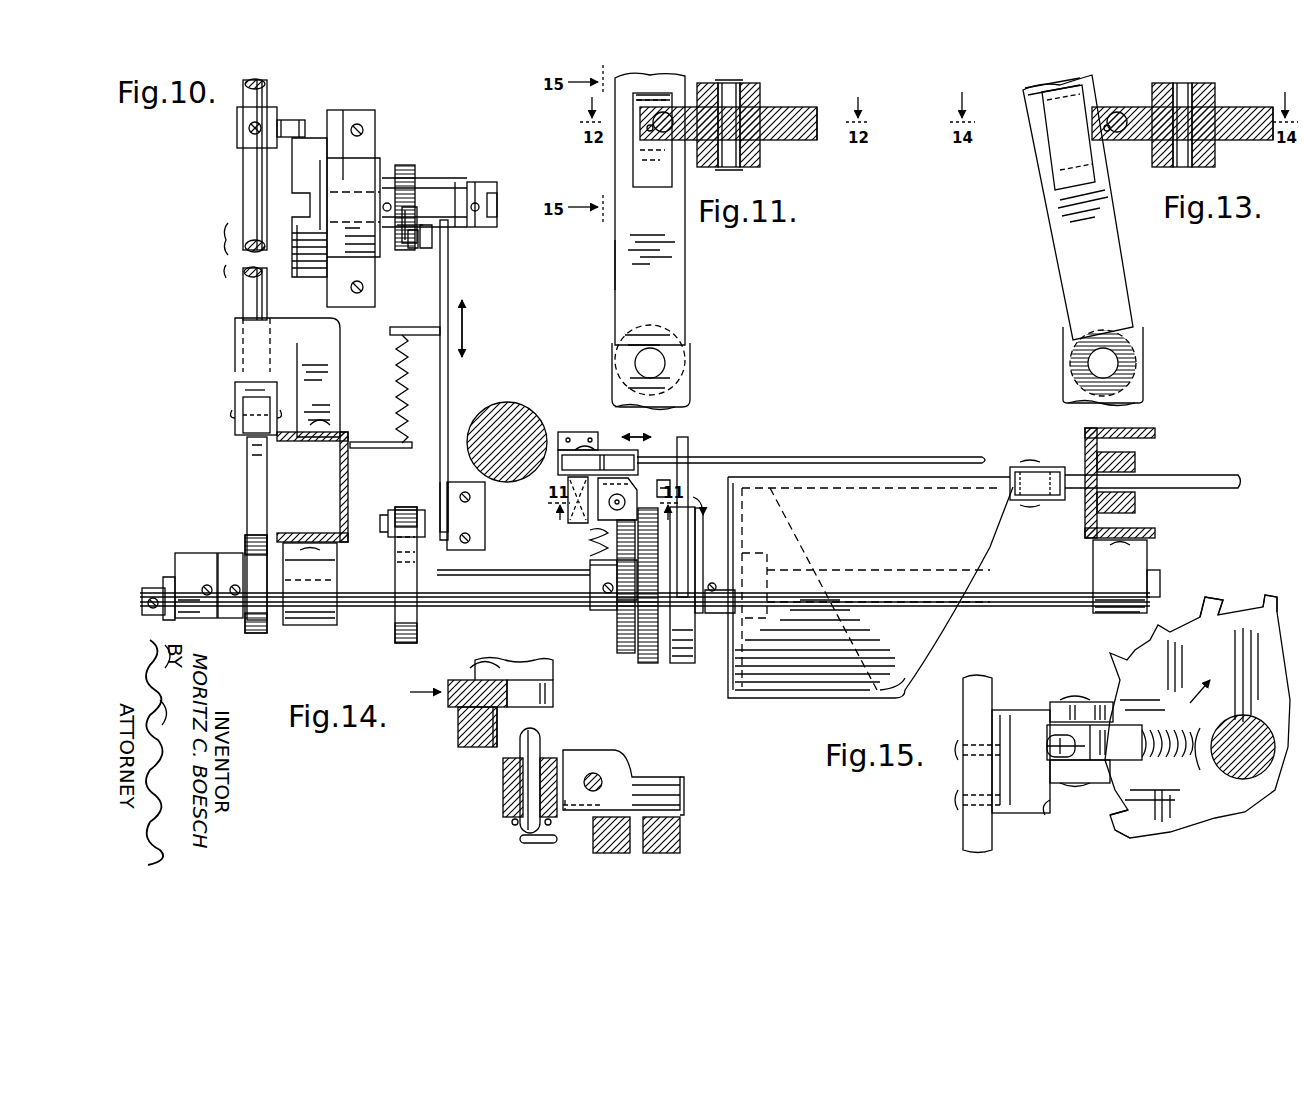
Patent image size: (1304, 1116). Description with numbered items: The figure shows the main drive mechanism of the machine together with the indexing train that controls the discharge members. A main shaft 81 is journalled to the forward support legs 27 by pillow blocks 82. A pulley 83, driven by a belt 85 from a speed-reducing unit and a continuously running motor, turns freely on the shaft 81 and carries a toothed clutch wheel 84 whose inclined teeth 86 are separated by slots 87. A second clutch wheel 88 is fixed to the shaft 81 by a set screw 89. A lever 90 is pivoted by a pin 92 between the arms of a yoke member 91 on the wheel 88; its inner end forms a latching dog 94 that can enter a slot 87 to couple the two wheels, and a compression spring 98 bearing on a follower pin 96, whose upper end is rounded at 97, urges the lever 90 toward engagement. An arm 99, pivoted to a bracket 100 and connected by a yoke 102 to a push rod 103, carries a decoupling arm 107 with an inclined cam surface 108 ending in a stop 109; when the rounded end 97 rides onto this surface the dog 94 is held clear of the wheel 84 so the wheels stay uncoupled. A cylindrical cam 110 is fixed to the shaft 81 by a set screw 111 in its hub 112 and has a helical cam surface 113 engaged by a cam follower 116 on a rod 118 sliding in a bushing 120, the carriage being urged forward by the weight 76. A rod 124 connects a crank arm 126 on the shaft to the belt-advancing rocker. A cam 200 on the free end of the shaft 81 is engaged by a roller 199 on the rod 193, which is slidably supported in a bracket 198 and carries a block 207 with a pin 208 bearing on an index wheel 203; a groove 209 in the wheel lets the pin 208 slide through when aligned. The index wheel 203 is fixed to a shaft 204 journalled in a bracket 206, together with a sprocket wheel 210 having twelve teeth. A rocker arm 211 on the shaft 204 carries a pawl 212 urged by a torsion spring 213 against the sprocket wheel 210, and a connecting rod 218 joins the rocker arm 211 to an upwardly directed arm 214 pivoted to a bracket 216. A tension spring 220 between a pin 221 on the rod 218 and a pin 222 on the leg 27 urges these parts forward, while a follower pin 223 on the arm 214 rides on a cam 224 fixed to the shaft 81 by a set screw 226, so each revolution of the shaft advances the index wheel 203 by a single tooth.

In FIG. 10, the forward support legs 27 is at (340, 482).
In FIG. 10, the weight 76 is at (511, 403).
In FIG. 10, the main shaft 81 is at (510, 603).
In FIG. 15, the main shaft 81 is at (1258, 730).
In FIG. 10, the pillow blocks 82 is at (296, 625).
In FIG. 10, the pulley 83 is at (703, 520).
In FIG. 10, the toothed clutch wheel 84 is at (650, 663).
In FIG. 14, the toothed clutch wheel 84 is at (680, 835).
In FIG. 15, the toothed clutch wheel 84 is at (1245, 690).
In FIG. 10, the belt 85 is at (688, 440).
In FIG. 14, the longitudinally inclined teeth 86 is at (685, 803).
In FIG. 15, the longitudinally inclined teeth 86 is at (1212, 597).
In FIG. 10, the intervening slots 87 is at (627, 592).
In FIG. 15, the intervening slots 87 is at (1268, 597).
In FIG. 10, the second clutch wheel 88 is at (624, 653).
In FIG. 14, the second clutch wheel 88 is at (595, 840).
In FIG. 15, the second clutch wheel 88 is at (1195, 815).
In FIG. 10, the set screw 89 is at (602, 592).
In FIG. 10, the lever 90 is at (630, 482).
In FIG. 11, the lever 90 is at (805, 108).
In FIG. 13, the lever 90 is at (1243, 108).
In FIG. 14, the lever 90 is at (650, 778).
In FIG. 15, the lever 90 is at (1120, 770).
In FIG. 11, the yoke member 91 is at (762, 102).
In FIG. 13, the yoke member 91 is at (1215, 102).
In FIG. 14, the yoke member 91 is at (625, 755).
In FIG. 15, the yoke member 91 is at (1103, 712).
In FIG. 10, the pin 92 is at (604, 585).
In FIG. 11, the pin 92 is at (762, 142).
In FIG. 13, the pin 92 is at (1192, 165).
In FIG. 14, the pin 92 is at (602, 780).
In FIG. 15, the pin 92 is at (1078, 698).
In FIG. 10, the latching dog 94 is at (672, 490).
In FIG. 11, the latching dog 94 is at (818, 125).
In FIG. 13, the latching dog 94 is at (1273, 130).
In FIG. 14, the latching dog 94 is at (680, 785).
In FIG. 10, the follower pin 96 is at (570, 520).
In FIG. 11, the follower pin 96 is at (664, 135).
In FIG. 13, the follower pin 96 is at (1110, 133).
In FIG. 14, the follower pin 96 is at (535, 752).
In FIG. 15, the follower pin 96 is at (1094, 742).
In FIG. 11, the rounded upper end 97 is at (648, 130).
In FIG. 13, the rounded upper end 97 is at (1108, 125).
In FIG. 14, the rounded upper end 97 is at (530, 750).
In FIG. 15, the rounded upper end 97 is at (1050, 745).
In FIG. 10, the compression spring 98 is at (590, 541).
In FIG. 14, the compression spring 98 is at (515, 828).
In FIG. 15, the compression spring 98 is at (1190, 740).
In FIG. 10, the arm 99 is at (558, 470).
In FIG. 11, the arm 99 is at (670, 298).
In FIG. 13, the arm 99 is at (1075, 248).
In FIG. 14, the arm 99 is at (545, 695).
In FIG. 15, the arm 99 is at (975, 682).
In FIG. 10, the bracket 100 is at (562, 432).
In FIG. 11, the bracket 100 is at (690, 385).
In FIG. 13, the bracket 100 is at (1143, 383).
In FIG. 14, the bracket 100 is at (490, 662).
In FIG. 10, the yoke 102 is at (608, 450).
In FIG. 10, the push rod 103 is at (885, 458).
In FIG. 11, the decoupling arm 107 is at (613, 250).
In FIG. 13, the decoupling arm 107 is at (1038, 195).
In FIG. 14, the decoupling arm 107 is at (445, 720).
In FIG. 15, the decoupling arm 107 is at (1008, 712).
In FIG. 11, the inclined cam surface 108 is at (640, 160).
In FIG. 13, the inclined cam surface 108 is at (1062, 158).
In FIG. 14, the inclined cam surface 108 is at (455, 745).
In FIG. 15, the inclined cam surface 108 is at (1042, 815).
In FIG. 11, the stop 109 is at (640, 95).
In FIG. 13, the stop 109 is at (1058, 92).
In FIG. 15, the stop 109 is at (1058, 702).
In FIG. 10, the cylindrical cam 110 is at (820, 702).
In FIG. 10, the set screw 111 is at (715, 585).
In FIG. 10, the hub 112 is at (695, 660).
In FIG. 10, the helical cam surface 113 is at (905, 690).
In FIG. 10, the cam follower 116 is at (1015, 468).
In FIG. 10, the rod 118 is at (1195, 476).
In FIG. 10, the bushing 120 is at (1140, 505).
In FIG. 10, the rod 124 is at (148, 588).
In FIG. 10, the crank arm 126 is at (190, 553).
In FIG. 10, the rod 193 is at (243, 295).
In FIG. 10, the bracket 198 is at (330, 380).
In FIG. 10, the cam-follower roller 199 is at (242, 412).
In FIG. 10, the cam 200 is at (248, 482).
In FIG. 10, the index wheel 203 is at (313, 140).
In FIG. 10, the shaft 204 is at (497, 203).
In FIG. 10, the bracket 206 is at (360, 170).
In FIG. 10, the block 207 is at (270, 112).
In FIG. 10, the pin 208 is at (290, 124).
In FIG. 10, the groove 209 is at (300, 207).
In FIG. 10, the sprocket wheel 210 is at (405, 165).
In FIG. 10, the rocker arm 211 is at (425, 250).
In FIG. 10, the pawl member 212 is at (410, 245).
In FIG. 10, the torsion spring 213 is at (414, 212).
In FIG. 10, the upwardly directed arm 214 is at (444, 545).
In FIG. 10, the bracket 216 is at (487, 530).
In FIG. 10, the connecting rod 218 is at (450, 270).
In FIG. 10, the helical tension spring 220 is at (408, 396).
In FIG. 10, the pin 221 is at (402, 327).
In FIG. 10, the pin 222 is at (377, 442).
In FIG. 10, the cam follower pin 223 is at (393, 512).
In FIG. 10, the cam 224 is at (425, 643).
In FIG. 10, the set screw 226 is at (345, 640).